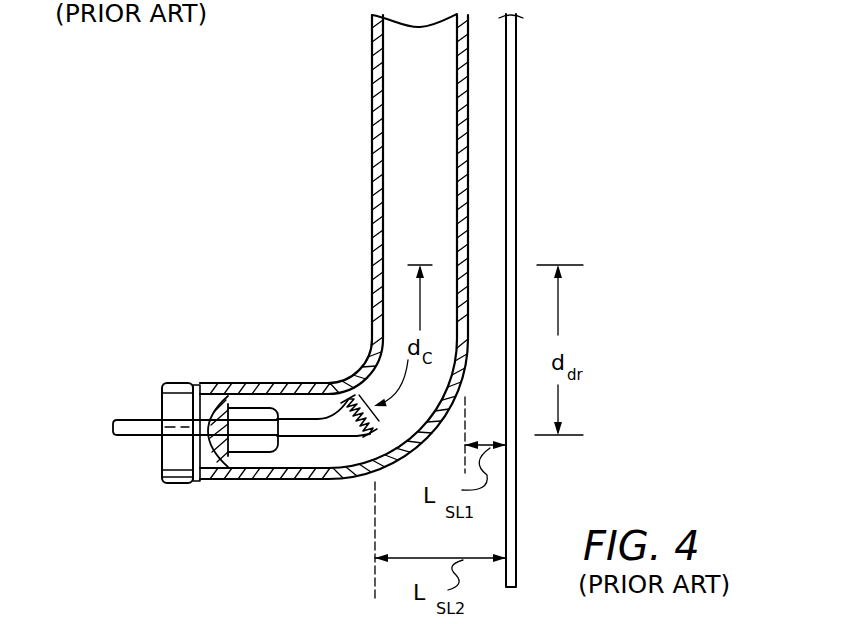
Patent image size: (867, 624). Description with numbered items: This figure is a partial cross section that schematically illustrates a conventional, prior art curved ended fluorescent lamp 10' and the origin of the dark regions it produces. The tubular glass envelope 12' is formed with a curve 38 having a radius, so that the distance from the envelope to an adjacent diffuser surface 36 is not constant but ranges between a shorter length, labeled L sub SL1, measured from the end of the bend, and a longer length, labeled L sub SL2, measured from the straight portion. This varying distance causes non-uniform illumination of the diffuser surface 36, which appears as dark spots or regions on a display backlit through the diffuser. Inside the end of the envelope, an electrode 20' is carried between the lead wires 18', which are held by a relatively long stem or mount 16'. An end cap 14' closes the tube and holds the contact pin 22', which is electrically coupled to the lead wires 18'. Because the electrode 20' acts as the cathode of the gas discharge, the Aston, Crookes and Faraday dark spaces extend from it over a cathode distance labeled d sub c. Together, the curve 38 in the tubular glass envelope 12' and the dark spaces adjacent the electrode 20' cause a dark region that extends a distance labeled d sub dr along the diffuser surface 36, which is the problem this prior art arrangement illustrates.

The curved ended fluorescent lamp 10' is at (334, 246).
The tubular glass envelope 12' is at (348, 171).
The end cap 14' is at (149, 418).
The stem or mount 16' is at (243, 397).
The lead wires 18' is at (317, 477).
The electrode 20' is at (327, 382).
The contact pin 22' is at (160, 421).
The diffuser surface 36 is at (517, 177).
The curve 38 is at (426, 438).